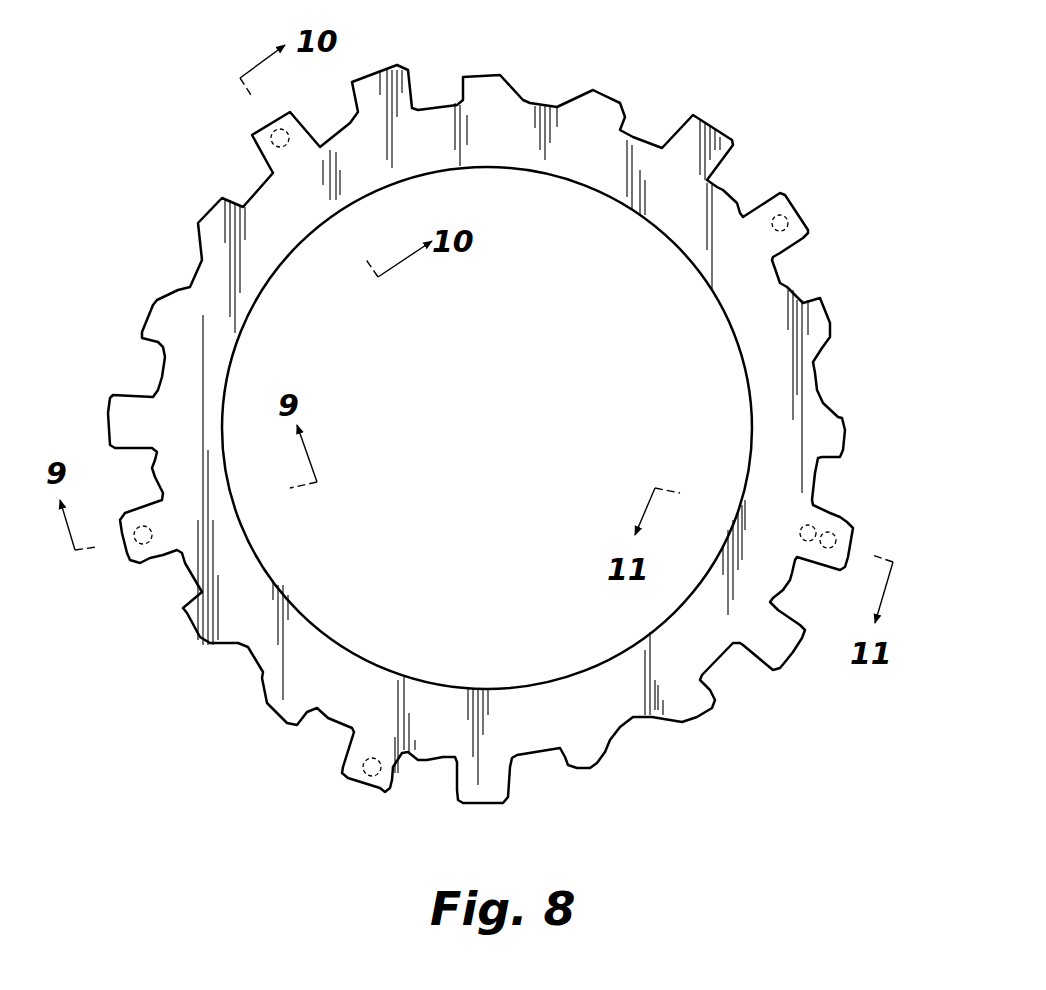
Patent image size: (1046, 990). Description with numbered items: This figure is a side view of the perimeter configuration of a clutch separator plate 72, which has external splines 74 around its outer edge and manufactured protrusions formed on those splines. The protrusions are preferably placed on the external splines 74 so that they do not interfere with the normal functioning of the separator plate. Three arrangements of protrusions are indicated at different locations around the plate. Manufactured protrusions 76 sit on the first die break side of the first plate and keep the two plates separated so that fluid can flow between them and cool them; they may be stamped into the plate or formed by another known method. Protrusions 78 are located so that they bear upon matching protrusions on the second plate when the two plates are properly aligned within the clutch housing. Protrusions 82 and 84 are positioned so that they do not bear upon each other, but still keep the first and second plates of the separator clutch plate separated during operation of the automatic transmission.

The clutch separator plate 72 is at (780, 283).
The external splines 74 is at (713, 125).
The manufactured protrusions 76 is at (144, 544).
The protrusions 78 is at (271, 141).
The protrusions 82 is at (835, 525).
The protrusions 84 is at (815, 527).